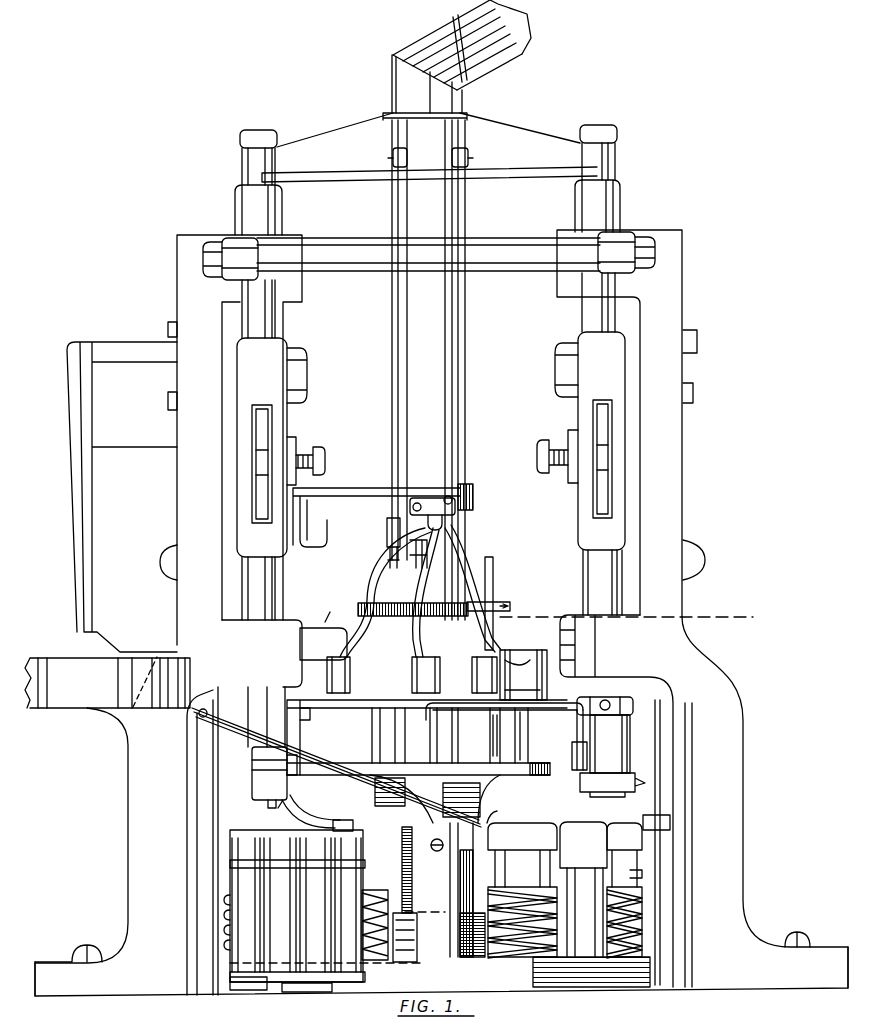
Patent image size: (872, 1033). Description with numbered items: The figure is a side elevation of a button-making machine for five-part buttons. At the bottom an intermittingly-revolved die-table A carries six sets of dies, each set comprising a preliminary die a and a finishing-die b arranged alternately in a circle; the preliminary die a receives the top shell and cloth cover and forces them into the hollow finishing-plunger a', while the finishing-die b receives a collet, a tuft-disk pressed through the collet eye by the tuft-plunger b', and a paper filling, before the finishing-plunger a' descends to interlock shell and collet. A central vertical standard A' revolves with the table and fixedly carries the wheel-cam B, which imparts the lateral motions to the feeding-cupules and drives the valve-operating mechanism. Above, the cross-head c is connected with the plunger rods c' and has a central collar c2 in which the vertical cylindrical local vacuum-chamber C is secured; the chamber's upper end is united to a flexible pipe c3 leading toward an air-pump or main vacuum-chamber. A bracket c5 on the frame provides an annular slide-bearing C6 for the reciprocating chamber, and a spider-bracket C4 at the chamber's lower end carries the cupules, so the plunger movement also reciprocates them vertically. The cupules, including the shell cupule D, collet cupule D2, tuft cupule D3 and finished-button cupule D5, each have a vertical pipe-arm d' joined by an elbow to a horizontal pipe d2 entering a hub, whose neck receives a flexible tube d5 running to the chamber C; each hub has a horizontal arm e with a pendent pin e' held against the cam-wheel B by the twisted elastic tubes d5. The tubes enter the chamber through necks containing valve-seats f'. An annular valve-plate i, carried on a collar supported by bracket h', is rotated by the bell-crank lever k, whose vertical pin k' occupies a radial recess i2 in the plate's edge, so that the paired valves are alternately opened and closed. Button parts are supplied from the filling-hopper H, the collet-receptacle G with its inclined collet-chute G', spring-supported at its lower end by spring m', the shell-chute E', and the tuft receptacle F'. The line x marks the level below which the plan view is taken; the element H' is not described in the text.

The flexible pipe c3 is at (457, 60).
The local vacuum-chamber C is at (428, 370).
The central collar c2 is at (430, 155).
The cross-head c is at (429, 147).
The plunger rods c' is at (428, 361).
The filling-hopper H is at (122, 497).
The bracket c5 is at (376, 514).
The annular slide-bearing C6 is at (474, 494).
The valve-seat f' is at (421, 532).
The flexible tubing d5 is at (418, 591).
The rigid vertical pin k' is at (497, 603).
The annular valve-plate i is at (413, 601).
The radial recess i2 is at (494, 603).
The bell-crank lever k is at (523, 675).
The bracket h' is at (323, 629).
The spider-bracket C4 is at (412, 675).
The line x is at (631, 611).
The collet-receptacle G is at (107, 682).
The collet-chute G' is at (336, 767).
The tuft-plunger b' is at (269, 777).
The cupule for cloth-tuft disks D3 is at (301, 773).
The shell-chute E' is at (317, 812).
The pin H' is at (279, 812).
The horizontal pipe d2 is at (435, 737).
The vertical pipe-arm d' is at (438, 739).
The horizontal arm e is at (408, 735).
The pendent pin e' is at (440, 735).
The wheel-cam B is at (483, 735).
The cupule for feeding shells D is at (529, 735).
The finishing-plunger a' is at (611, 747).
The cupule for removing the finished button D5 is at (570, 756).
The cupule for collets D2 is at (460, 793).
The spring m' is at (502, 812).
The preliminary die a is at (565, 890).
The finishing-die b is at (583, 889).
The receptacle for cloth-disk tufts F' is at (322, 906).
The central vertical socket or standard A' is at (419, 894).
The die-table A is at (441, 971).